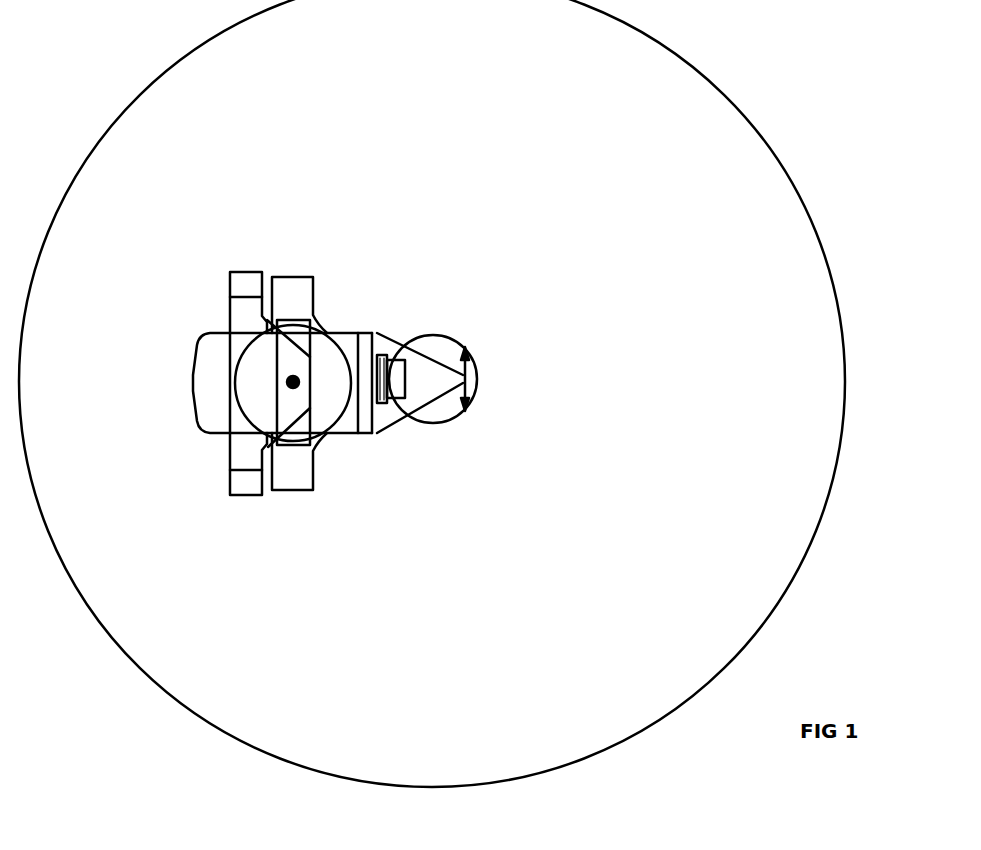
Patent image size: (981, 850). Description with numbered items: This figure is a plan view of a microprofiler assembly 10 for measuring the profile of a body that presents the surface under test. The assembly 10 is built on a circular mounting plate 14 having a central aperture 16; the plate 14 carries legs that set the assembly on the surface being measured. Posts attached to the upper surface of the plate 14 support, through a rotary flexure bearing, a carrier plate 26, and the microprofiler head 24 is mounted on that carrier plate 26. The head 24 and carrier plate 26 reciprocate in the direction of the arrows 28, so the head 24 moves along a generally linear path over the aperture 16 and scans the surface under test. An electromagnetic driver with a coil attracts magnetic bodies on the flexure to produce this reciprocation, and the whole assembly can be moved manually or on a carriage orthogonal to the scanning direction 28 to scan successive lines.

The microprofiler assembly 10 is at (786, 81).
The circular mounting plate 14 is at (792, 582).
The central aperture 16 is at (480, 372).
The microprofiler head 24 is at (393, 427).
The carrier plate 26 is at (200, 347).
The arrows 28 is at (460, 350).